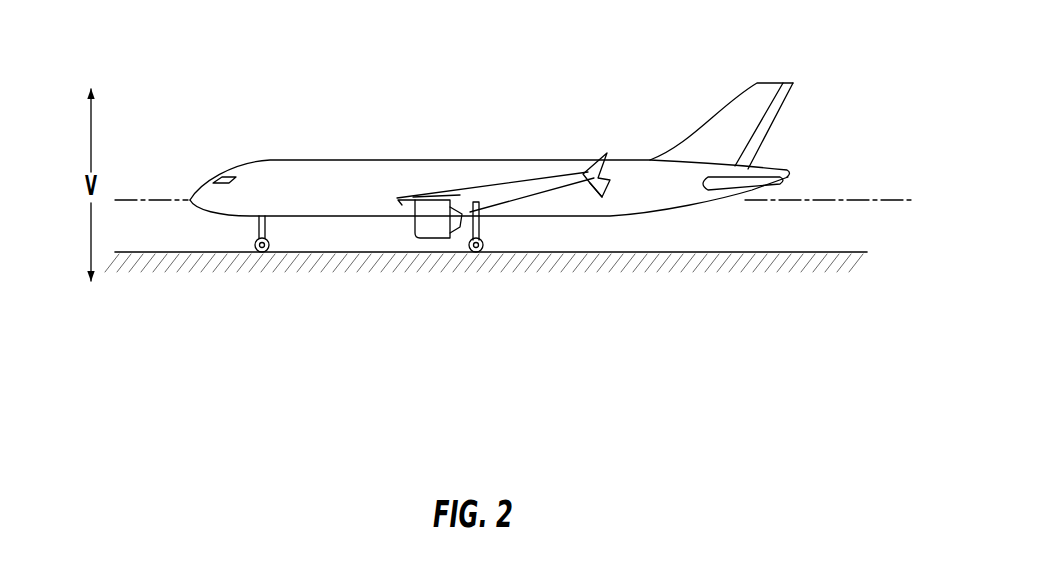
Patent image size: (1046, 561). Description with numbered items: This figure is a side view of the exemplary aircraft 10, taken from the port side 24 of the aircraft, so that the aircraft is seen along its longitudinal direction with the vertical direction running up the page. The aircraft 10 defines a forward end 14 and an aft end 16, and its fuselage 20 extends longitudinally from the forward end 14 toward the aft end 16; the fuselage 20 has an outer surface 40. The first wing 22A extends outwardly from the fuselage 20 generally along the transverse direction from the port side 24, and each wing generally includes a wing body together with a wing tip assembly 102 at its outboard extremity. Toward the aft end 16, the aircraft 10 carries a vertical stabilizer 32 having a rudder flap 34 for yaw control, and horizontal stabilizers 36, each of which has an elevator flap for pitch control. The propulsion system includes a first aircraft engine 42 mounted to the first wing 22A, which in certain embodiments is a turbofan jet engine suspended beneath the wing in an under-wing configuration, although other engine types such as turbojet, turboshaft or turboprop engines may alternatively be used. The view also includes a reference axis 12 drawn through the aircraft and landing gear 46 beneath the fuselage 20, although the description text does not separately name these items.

The aircraft 10 is at (255, 142).
The longitudinal centerline axis 12 is at (132, 199).
The forward end 14 is at (212, 214).
The aft end 16 is at (792, 180).
The fuselage 20 is at (278, 207).
The first wing 22A is at (548, 175).
The port side 24 is at (589, 202).
The vertical stabilizer 32 is at (753, 114).
The rudder flap 34 is at (794, 90).
The horizontal stabilizer 36 is at (745, 197).
The outer surface 40 is at (396, 149).
The first aircraft engine 42 is at (414, 243).
The main landing gear 46 is at (470, 248).
The wing tip assembly 102 is at (605, 147).